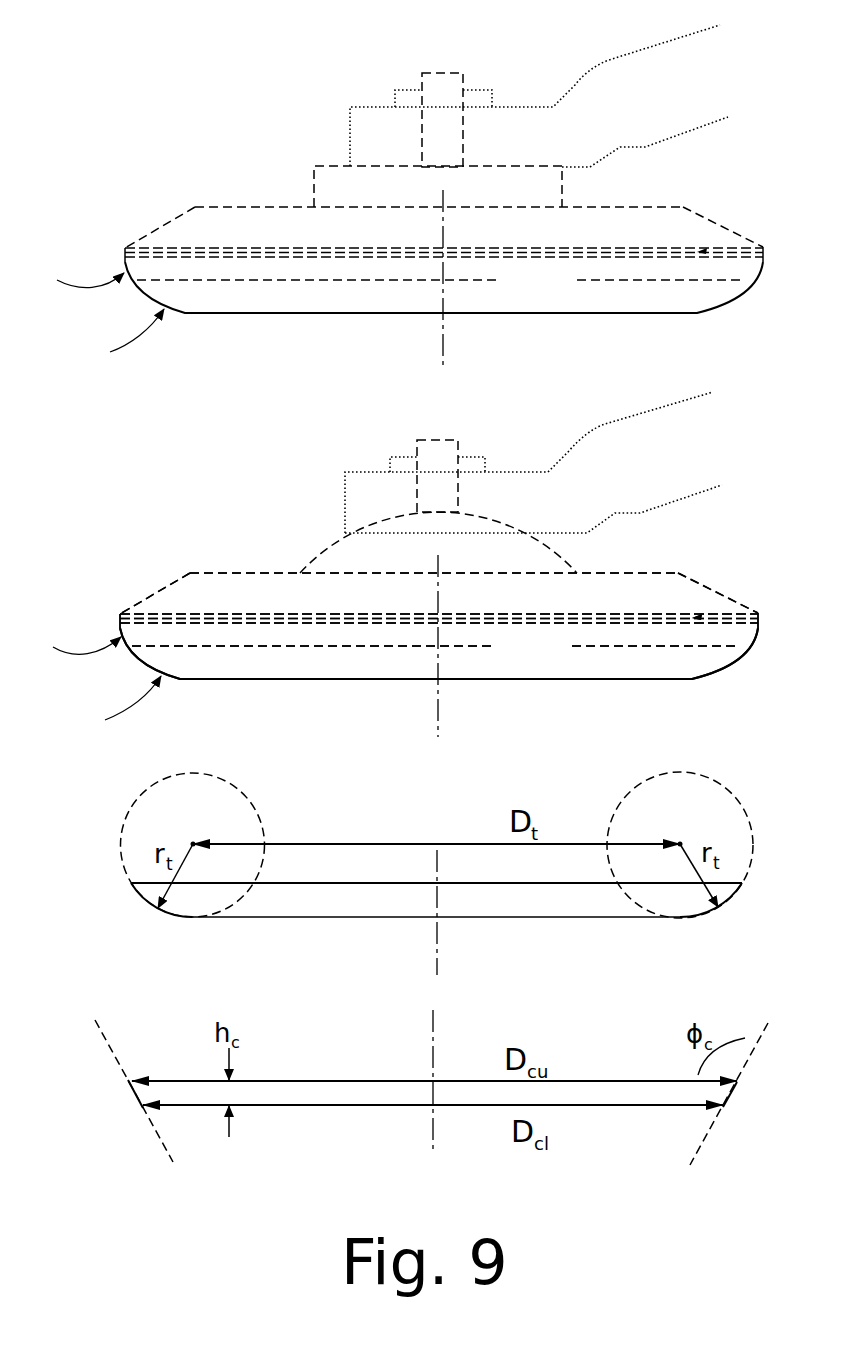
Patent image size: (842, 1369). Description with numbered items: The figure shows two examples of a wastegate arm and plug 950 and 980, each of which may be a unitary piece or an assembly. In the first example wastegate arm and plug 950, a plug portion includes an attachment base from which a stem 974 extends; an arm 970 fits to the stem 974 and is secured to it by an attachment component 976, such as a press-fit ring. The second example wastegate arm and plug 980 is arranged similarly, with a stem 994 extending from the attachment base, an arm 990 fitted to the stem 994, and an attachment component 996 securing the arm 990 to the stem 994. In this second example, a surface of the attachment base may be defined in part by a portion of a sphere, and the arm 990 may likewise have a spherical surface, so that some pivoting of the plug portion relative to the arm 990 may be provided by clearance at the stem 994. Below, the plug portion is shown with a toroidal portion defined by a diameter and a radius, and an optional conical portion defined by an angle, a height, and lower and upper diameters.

The wastegate arm and plug 950 is at (400, 199).
The arm 970 is at (588, 146).
The stem 974 is at (445, 73).
The attachment component 976 is at (395, 90).
The wastegate arm and plug 980 is at (395, 566).
The arm 990 is at (578, 513).
The stem 994 is at (443, 440).
The attachment component 996 is at (390, 456).